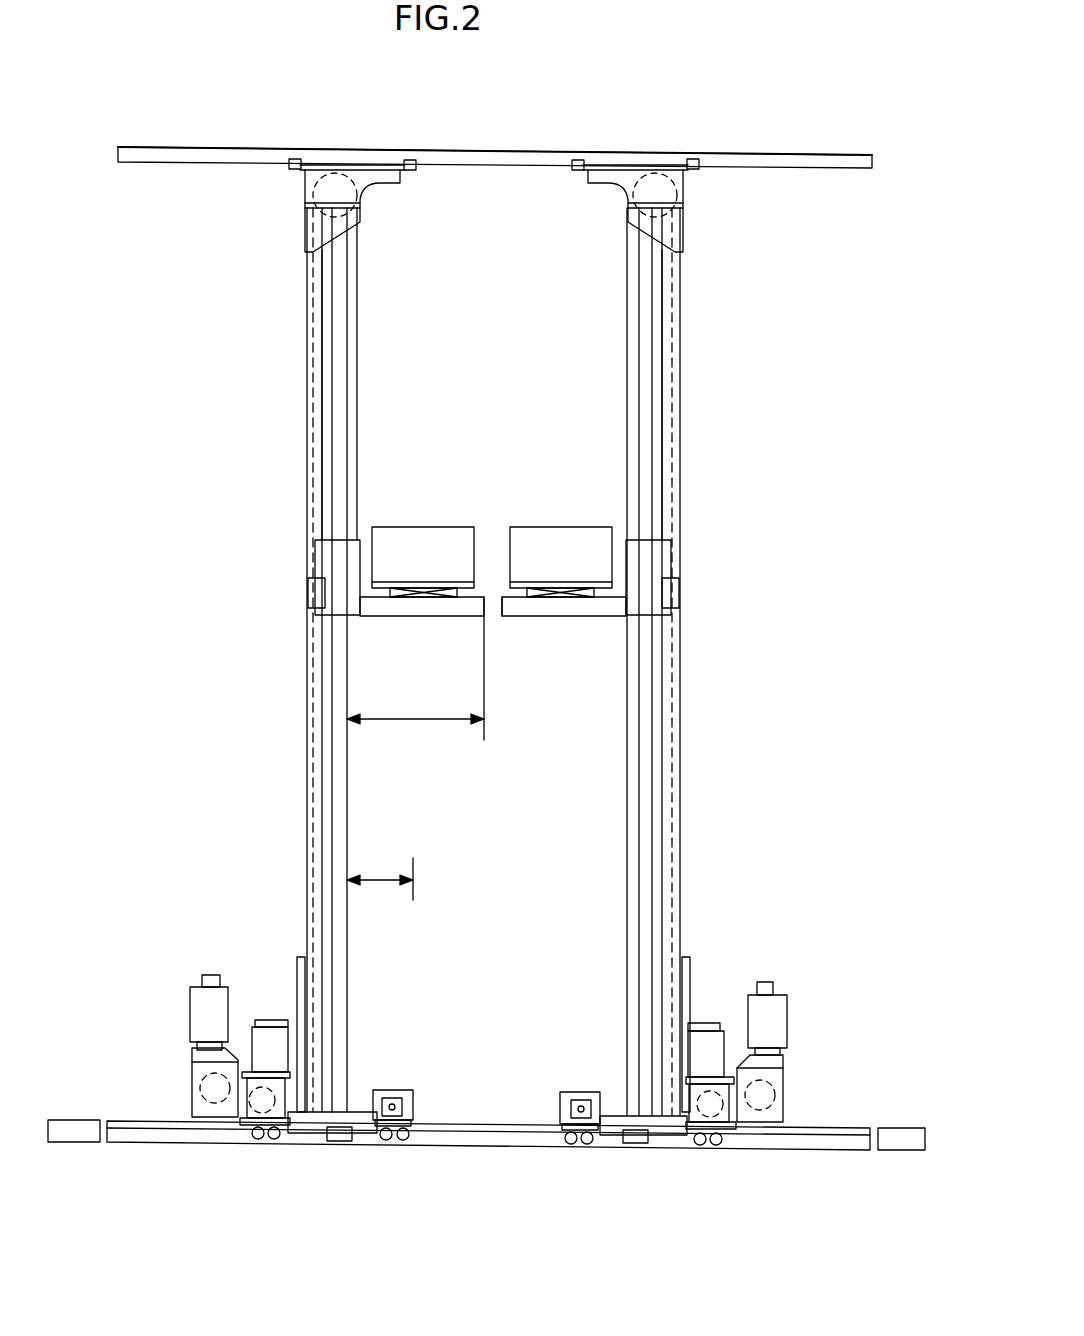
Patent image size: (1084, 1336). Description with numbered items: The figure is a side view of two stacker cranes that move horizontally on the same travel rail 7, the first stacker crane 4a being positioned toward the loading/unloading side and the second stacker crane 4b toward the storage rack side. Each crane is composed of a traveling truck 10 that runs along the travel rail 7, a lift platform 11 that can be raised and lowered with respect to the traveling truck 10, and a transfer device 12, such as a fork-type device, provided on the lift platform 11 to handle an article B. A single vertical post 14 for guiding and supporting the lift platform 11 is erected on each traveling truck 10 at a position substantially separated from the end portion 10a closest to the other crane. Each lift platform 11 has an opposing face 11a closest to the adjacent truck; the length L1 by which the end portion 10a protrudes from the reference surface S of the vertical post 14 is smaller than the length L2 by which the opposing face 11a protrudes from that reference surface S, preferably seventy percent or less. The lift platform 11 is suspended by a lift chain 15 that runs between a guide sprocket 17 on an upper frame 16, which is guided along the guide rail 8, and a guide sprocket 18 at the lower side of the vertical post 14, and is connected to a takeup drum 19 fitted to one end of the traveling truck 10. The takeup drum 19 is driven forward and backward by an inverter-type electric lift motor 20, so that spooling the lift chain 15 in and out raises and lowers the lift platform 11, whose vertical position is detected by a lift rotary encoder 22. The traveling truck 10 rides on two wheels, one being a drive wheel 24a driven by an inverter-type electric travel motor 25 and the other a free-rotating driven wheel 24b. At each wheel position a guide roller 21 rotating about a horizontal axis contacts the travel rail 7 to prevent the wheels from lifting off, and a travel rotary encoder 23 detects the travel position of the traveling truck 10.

The guide rail 8 is at (215, 147).
The upper frame 16 is at (390, 163).
The guide sprocket 17 is at (316, 205).
The vertical post 14 is at (313, 690).
The lift chain 15 is at (322, 367).
The lift rotary encoder 22 is at (315, 590).
The article B is at (434, 540).
The transfer device 12 is at (422, 588).
The lift platform 11 is at (395, 617).
The opposing face 11a is at (484, 612).
The length L2 is at (400, 722).
The length L1 is at (385, 875).
The reference surface S is at (355, 790).
The guide sprocket 18 is at (298, 962).
The electric lift motor 20 is at (212, 1015).
The takeup drum 19 is at (195, 1060).
The electric travel motor 25 is at (265, 1040).
The drive wheel 24a is at (250, 1130).
The driven wheel 24b is at (571, 1098).
The guide roller 21 is at (266, 1141).
The traveling truck 10 is at (352, 1124).
The end portion 10a is at (406, 1130).
The travel rotary encoder 23 is at (346, 1141).
The travel rail 7 is at (142, 1143).
The first stacker crane 4a is at (345, 1152).
The second stacker crane 4b is at (650, 1152).